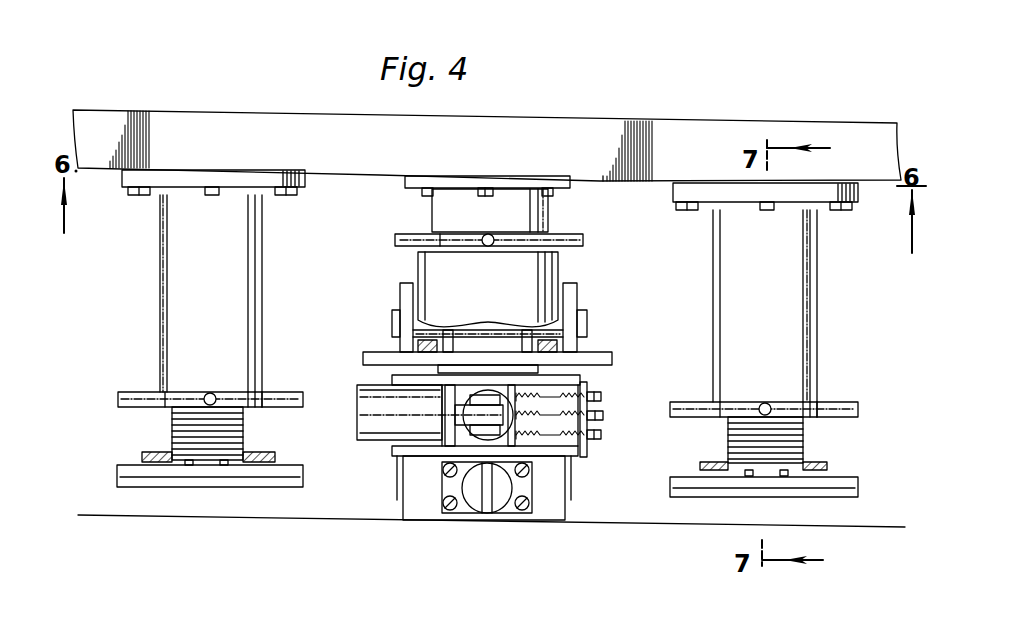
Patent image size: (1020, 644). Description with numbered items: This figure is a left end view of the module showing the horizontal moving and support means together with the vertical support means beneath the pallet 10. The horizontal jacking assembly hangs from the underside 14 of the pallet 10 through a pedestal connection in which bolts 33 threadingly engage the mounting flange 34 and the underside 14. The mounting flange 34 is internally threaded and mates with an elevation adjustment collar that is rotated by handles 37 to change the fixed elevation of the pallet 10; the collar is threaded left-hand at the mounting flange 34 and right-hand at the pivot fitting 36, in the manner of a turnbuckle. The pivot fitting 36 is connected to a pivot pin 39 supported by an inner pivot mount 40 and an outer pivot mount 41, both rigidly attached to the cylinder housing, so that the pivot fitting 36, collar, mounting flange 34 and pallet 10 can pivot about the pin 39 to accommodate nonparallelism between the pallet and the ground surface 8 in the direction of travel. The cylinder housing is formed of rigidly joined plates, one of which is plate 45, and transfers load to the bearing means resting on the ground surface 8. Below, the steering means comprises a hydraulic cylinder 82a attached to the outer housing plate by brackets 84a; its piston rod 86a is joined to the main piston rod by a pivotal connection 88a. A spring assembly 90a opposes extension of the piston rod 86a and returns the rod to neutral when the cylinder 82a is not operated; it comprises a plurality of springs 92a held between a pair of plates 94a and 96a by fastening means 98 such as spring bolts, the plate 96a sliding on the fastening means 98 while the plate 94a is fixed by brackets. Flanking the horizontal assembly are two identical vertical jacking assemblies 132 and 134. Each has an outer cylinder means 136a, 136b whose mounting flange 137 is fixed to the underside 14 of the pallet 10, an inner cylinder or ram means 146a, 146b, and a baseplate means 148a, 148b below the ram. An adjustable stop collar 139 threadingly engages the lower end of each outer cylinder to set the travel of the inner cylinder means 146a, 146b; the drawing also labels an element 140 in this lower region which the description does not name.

The ground surface 8 is at (622, 527).
The pallet 10 is at (713, 117).
The underside of pallet 14 is at (633, 183).
The bolts 33 is at (427, 193).
The mounting flange 34 is at (548, 212).
The pivot fitting 36 is at (420, 268).
The handles 37 is at (400, 234).
The pivot pin 39 is at (392, 321).
The inner pivot mount 40 is at (447, 335).
The outer pivot mount 41 is at (405, 292).
The plate 45 is at (368, 356).
The hydraulic cylinder 82a is at (360, 402).
The brackets 84a is at (452, 428).
The piston rod 86a is at (458, 413).
The pivotal connection 88a is at (440, 370).
The spring assembly 90a is at (588, 438).
The springs 92a is at (592, 390).
The plate 94a is at (603, 433).
The plate 96a is at (528, 448).
The fastening means 98 is at (605, 413).
The vertical jacking assembly 132 is at (165, 266).
The vertical jacking assembly 134 is at (806, 326).
The outer cylinder means 136a is at (163, 350).
The outer cylinder means 136b is at (812, 386).
The mounting flange 137 is at (133, 187).
The adjustable stop collar 139 is at (298, 405).
The plate 140 is at (125, 397).
The inner cylinder or ram means 146a is at (180, 437).
The inner cylinder or ram means 146b is at (785, 462).
The baseplate means 148a is at (170, 480).
The baseplate means 148b is at (843, 488).